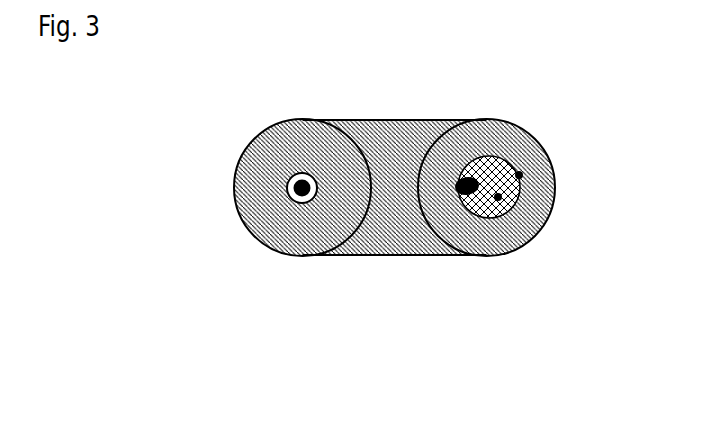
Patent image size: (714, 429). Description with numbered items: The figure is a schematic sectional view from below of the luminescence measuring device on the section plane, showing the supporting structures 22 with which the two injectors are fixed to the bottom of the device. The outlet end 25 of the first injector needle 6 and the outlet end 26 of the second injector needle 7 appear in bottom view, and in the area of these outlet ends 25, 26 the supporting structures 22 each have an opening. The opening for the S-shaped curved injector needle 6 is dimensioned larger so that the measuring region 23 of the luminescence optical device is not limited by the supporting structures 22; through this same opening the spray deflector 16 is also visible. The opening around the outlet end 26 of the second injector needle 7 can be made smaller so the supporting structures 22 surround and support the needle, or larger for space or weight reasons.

The injector needle 7 is at (272, 138).
The outlet end 26 is at (293, 173).
The injector needle 6 is at (516, 148).
The outlet end 25 is at (481, 183).
The measuring region 23 is at (521, 176).
The spray deflector 16 is at (540, 232).
The supporting structures 22 is at (388, 231).